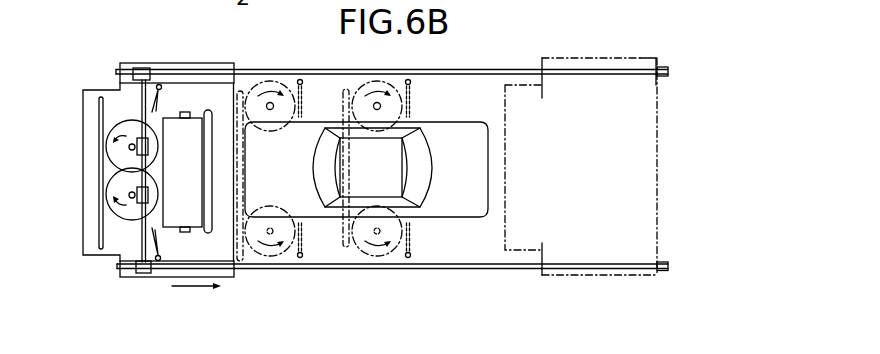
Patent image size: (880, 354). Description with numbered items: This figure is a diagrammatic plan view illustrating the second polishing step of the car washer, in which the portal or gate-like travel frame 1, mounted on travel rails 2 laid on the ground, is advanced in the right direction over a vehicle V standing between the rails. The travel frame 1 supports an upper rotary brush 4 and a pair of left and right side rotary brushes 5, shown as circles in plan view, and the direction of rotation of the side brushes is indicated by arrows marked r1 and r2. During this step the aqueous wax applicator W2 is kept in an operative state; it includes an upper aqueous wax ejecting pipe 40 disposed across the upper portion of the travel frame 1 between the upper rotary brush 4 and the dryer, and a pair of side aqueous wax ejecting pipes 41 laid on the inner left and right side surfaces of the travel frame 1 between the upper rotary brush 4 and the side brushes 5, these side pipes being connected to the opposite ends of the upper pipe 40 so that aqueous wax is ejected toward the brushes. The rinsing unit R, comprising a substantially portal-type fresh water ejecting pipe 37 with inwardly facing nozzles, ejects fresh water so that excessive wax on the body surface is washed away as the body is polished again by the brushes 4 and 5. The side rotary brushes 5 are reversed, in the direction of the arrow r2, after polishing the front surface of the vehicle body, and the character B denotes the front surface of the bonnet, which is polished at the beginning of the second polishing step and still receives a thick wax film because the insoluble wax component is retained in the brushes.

The travel frame 1 is at (217, 62).
The travel rails 2 is at (506, 69).
The upper rotary brush 4 is at (188, 182).
The side rotary brushes 5 is at (106, 147).
The fresh water ejecting pipe 37 is at (99, 100).
The upper aqueous wax ejecting pipe 40 is at (203, 112).
The side aqueous wax ejecting pipes 41 is at (161, 89).
The rinsing unit R is at (92, 81).
The aqueous wax applicator W2 is at (166, 58).
The vehicle V is at (458, 121).
The front surface of bonnet B is at (267, 184).
The roller radius r1 is at (120, 226).
The reversal direction of side rotary brushes r2 is at (272, 274).